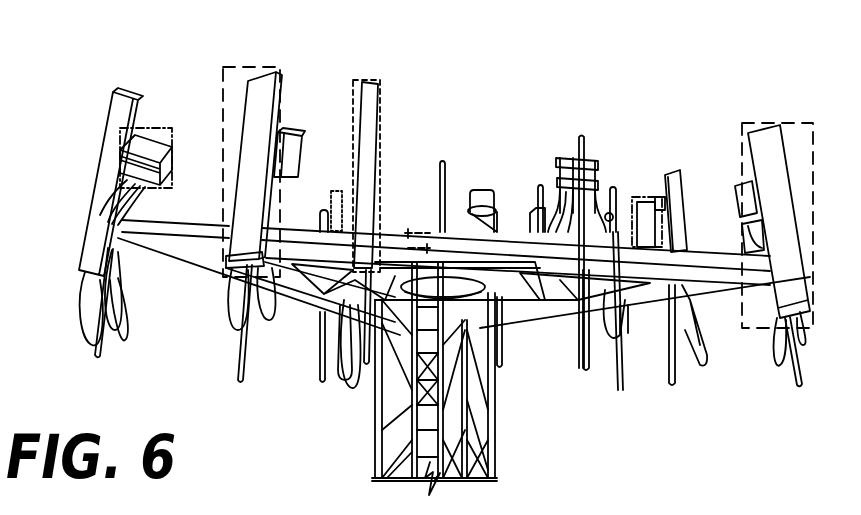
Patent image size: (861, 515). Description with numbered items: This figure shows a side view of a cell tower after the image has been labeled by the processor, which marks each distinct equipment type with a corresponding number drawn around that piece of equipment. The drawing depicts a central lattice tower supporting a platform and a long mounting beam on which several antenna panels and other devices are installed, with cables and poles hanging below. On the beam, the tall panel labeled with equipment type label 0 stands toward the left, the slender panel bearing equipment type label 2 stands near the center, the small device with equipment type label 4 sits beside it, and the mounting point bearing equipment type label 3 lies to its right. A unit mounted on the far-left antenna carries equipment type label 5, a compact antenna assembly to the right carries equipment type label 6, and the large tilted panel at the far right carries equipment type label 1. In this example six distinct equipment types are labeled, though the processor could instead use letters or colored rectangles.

The distinct equipment type label 0 is at (264, 209).
The distinct equipment type label 1 is at (774, 240).
The distinct equipment type label 2 is at (366, 208).
The distinct equipment type label 3 is at (417, 225).
The distinct equipment type label 4 is at (331, 196).
The distinct equipment type label 5 is at (136, 159).
The distinct equipment type label 6 is at (659, 208).